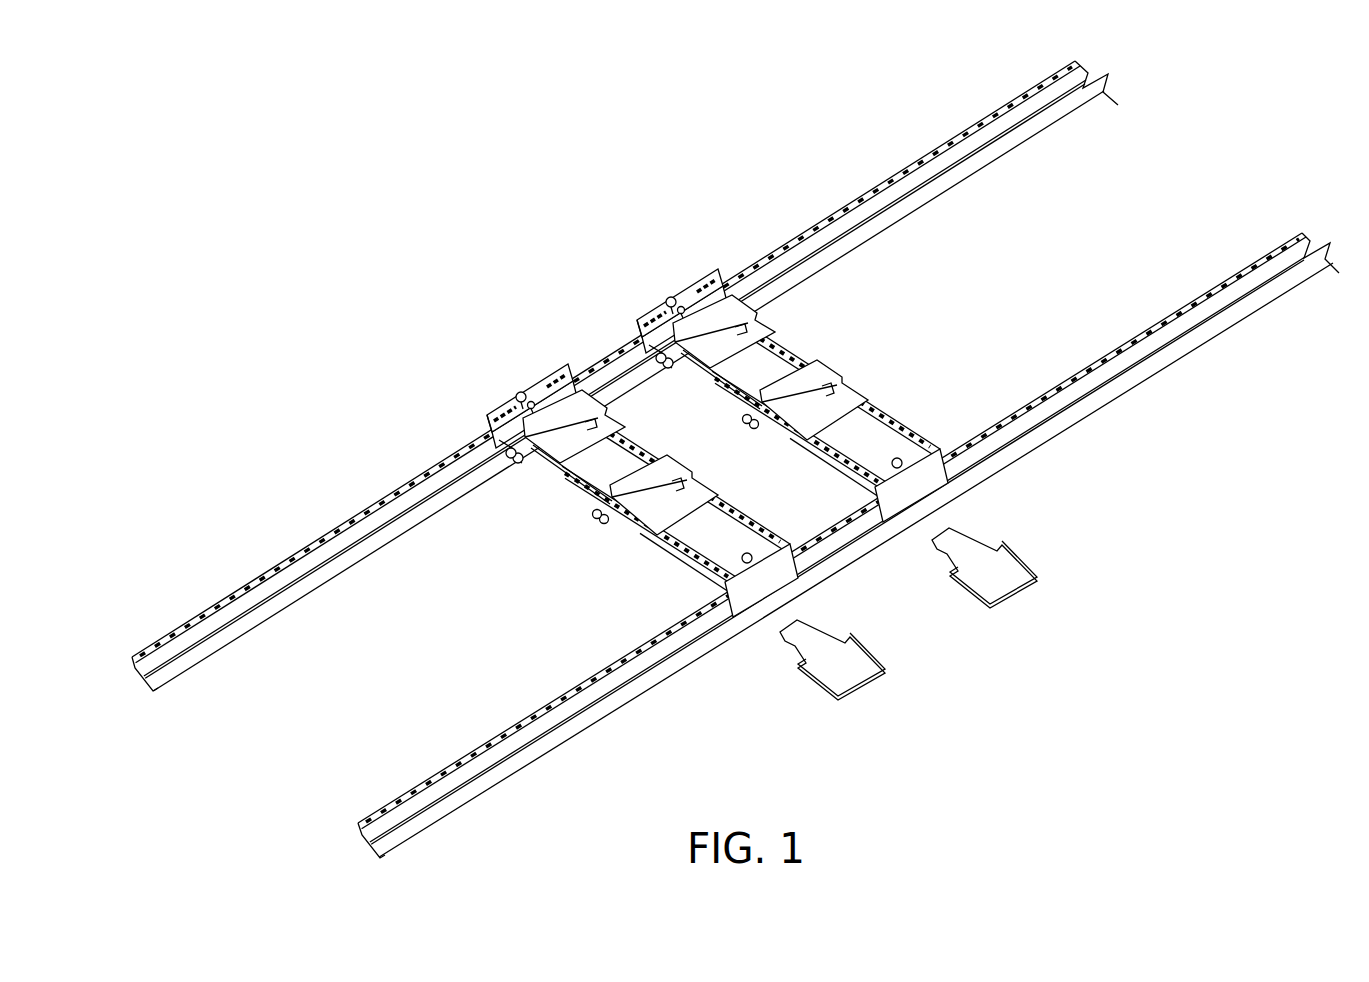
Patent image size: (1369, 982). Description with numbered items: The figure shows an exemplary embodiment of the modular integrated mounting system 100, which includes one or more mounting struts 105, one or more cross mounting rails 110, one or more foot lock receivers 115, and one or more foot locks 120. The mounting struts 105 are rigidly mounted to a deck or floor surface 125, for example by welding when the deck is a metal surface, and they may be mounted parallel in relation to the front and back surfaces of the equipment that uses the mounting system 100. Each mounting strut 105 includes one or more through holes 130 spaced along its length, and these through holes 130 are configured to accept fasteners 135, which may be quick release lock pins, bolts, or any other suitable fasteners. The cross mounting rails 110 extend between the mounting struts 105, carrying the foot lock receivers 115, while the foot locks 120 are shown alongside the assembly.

The modular integrated mounting system 100 is at (735, 459).
The mounting strut 105 is at (392, 490).
The cross mounting rail 110 is at (676, 562).
The foot lock receiver 115 is at (572, 448).
The foot lock 120 is at (862, 658).
The deck or floor surface 125 is at (735, 459).
The through hole 130 is at (735, 459).
The fastener 135 is at (527, 388).